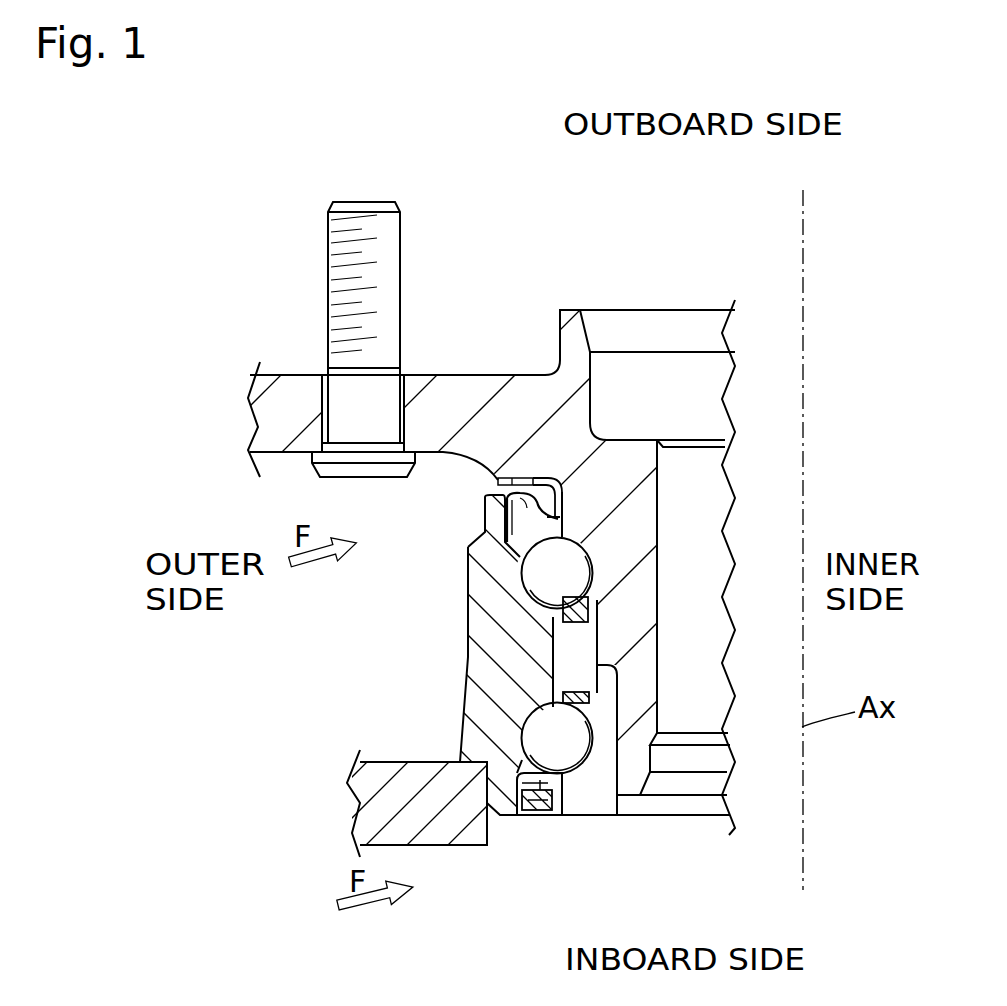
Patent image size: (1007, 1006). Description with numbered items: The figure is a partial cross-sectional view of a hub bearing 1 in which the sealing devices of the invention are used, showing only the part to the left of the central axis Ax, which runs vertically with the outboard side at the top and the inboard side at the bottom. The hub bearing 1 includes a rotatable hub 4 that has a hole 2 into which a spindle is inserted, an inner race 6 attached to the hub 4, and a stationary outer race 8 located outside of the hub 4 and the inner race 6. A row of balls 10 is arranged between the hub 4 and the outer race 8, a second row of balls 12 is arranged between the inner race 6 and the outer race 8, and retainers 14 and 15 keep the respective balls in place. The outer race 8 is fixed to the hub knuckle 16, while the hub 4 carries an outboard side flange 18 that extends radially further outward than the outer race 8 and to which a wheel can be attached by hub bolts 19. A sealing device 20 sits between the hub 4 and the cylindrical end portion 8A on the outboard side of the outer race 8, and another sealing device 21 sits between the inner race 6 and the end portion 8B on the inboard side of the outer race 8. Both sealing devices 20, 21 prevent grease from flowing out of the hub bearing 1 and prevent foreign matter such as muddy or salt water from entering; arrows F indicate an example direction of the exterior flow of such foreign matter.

The hub bearing 1 is at (660, 268).
The hole 2 is at (692, 570).
The hub 4 is at (645, 622).
The inner race 6 is at (578, 800).
The outer race 8 is at (483, 615).
The cylindrical end portion 8A is at (493, 513).
The end portion 8B is at (500, 812).
The balls 10 is at (530, 572).
The balls 12 is at (530, 730).
The retainer 14 is at (550, 620).
The retainer 15 is at (570, 690).
The hub knuckle 16 is at (427, 848).
The outboard side flange 18 is at (457, 382).
The hub bolt 19 is at (328, 297).
The sealing device 20 is at (502, 492).
The sealing device 21 is at (540, 815).